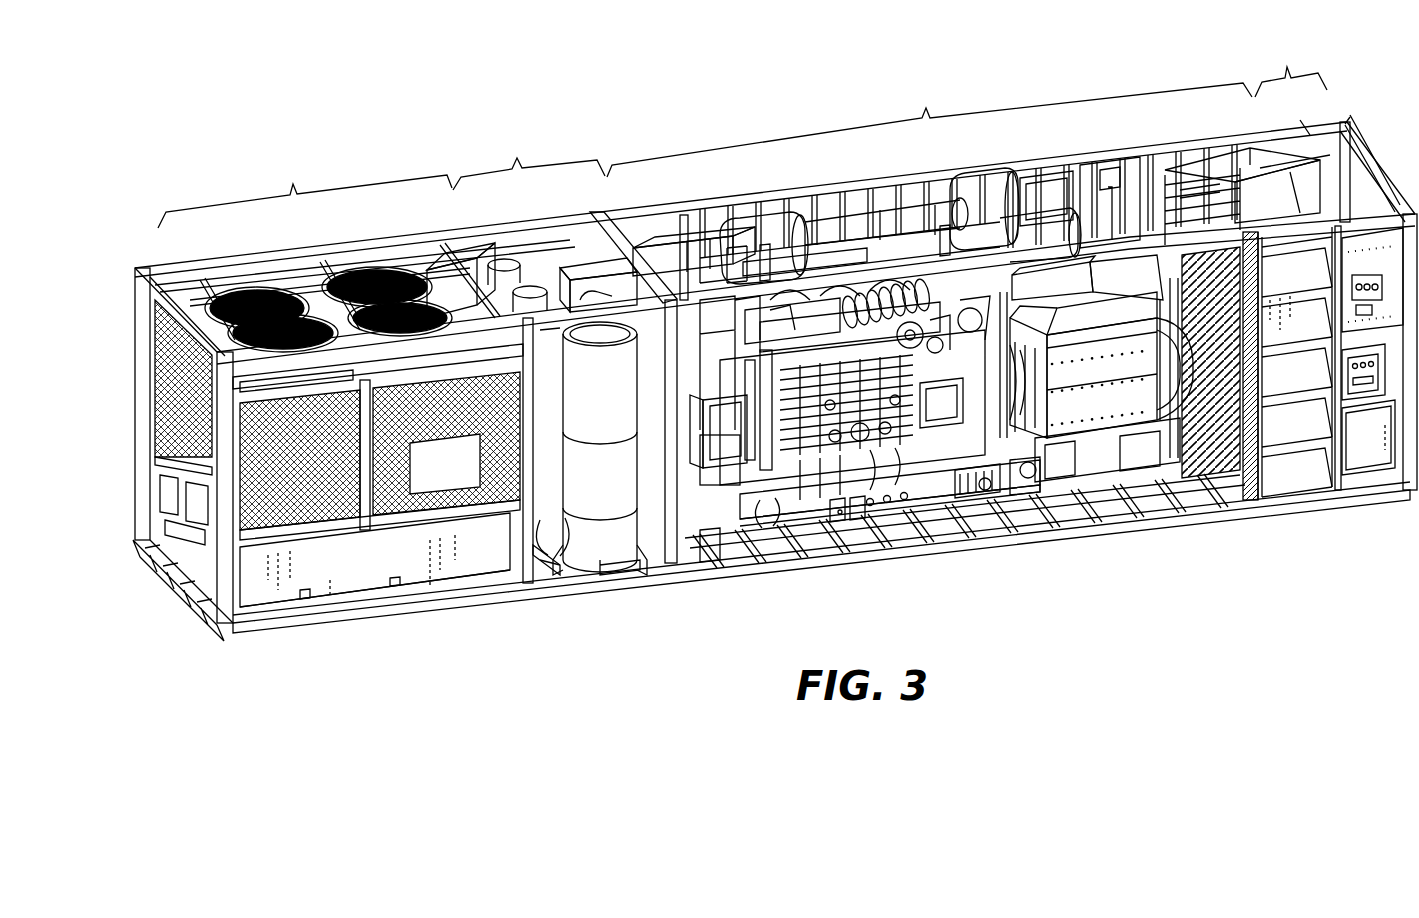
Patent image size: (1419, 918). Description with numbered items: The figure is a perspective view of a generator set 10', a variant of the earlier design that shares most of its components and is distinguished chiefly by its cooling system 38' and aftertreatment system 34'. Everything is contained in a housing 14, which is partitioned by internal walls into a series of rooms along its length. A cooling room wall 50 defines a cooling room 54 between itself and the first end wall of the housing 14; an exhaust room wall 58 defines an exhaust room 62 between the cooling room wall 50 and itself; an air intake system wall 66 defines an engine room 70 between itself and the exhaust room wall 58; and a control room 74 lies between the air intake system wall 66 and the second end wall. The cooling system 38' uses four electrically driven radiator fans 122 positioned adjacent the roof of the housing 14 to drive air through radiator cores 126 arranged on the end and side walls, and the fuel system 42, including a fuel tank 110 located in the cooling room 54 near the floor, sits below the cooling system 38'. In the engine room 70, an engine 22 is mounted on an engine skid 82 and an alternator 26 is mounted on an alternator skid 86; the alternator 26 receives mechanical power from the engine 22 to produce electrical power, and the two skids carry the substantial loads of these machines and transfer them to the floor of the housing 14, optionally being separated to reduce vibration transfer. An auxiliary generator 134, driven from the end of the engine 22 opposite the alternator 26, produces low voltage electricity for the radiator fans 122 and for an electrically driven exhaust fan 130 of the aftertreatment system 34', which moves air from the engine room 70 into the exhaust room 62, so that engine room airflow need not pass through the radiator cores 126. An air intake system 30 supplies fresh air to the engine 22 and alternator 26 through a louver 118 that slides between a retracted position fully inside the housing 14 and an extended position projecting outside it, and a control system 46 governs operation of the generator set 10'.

The generator set 10' is at (775, 362).
The housing 14 is at (690, 210).
The engine 22 is at (848, 448).
The alternator 26 is at (1063, 407).
The air intake system 30 is at (1265, 463).
The aftertreatment system 34' is at (600, 489).
The cooling system 38' is at (453, 548).
The fuel system 42 is at (323, 574).
The control system 46 is at (1357, 447).
The cooling room wall 50 is at (452, 247).
The cooling room 54 is at (365, 247).
The exhaust room wall 58 is at (608, 215).
The exhaust room 62 is at (565, 354).
The air intake system wall 66 is at (1268, 145).
The engine room 70 is at (929, 168).
The control room 74 is at (1246, 256).
The engine skid 82 is at (927, 497).
The alternator skid 86 is at (1123, 463).
The fuel tank 110 is at (260, 577).
The louver 118 is at (1303, 463).
The electrically driven radiator fans 122 is at (372, 268).
The radiator cores 126 is at (170, 390).
The electrically driven exhaust fan 130 is at (722, 230).
The auxiliary generator 134 is at (740, 455).